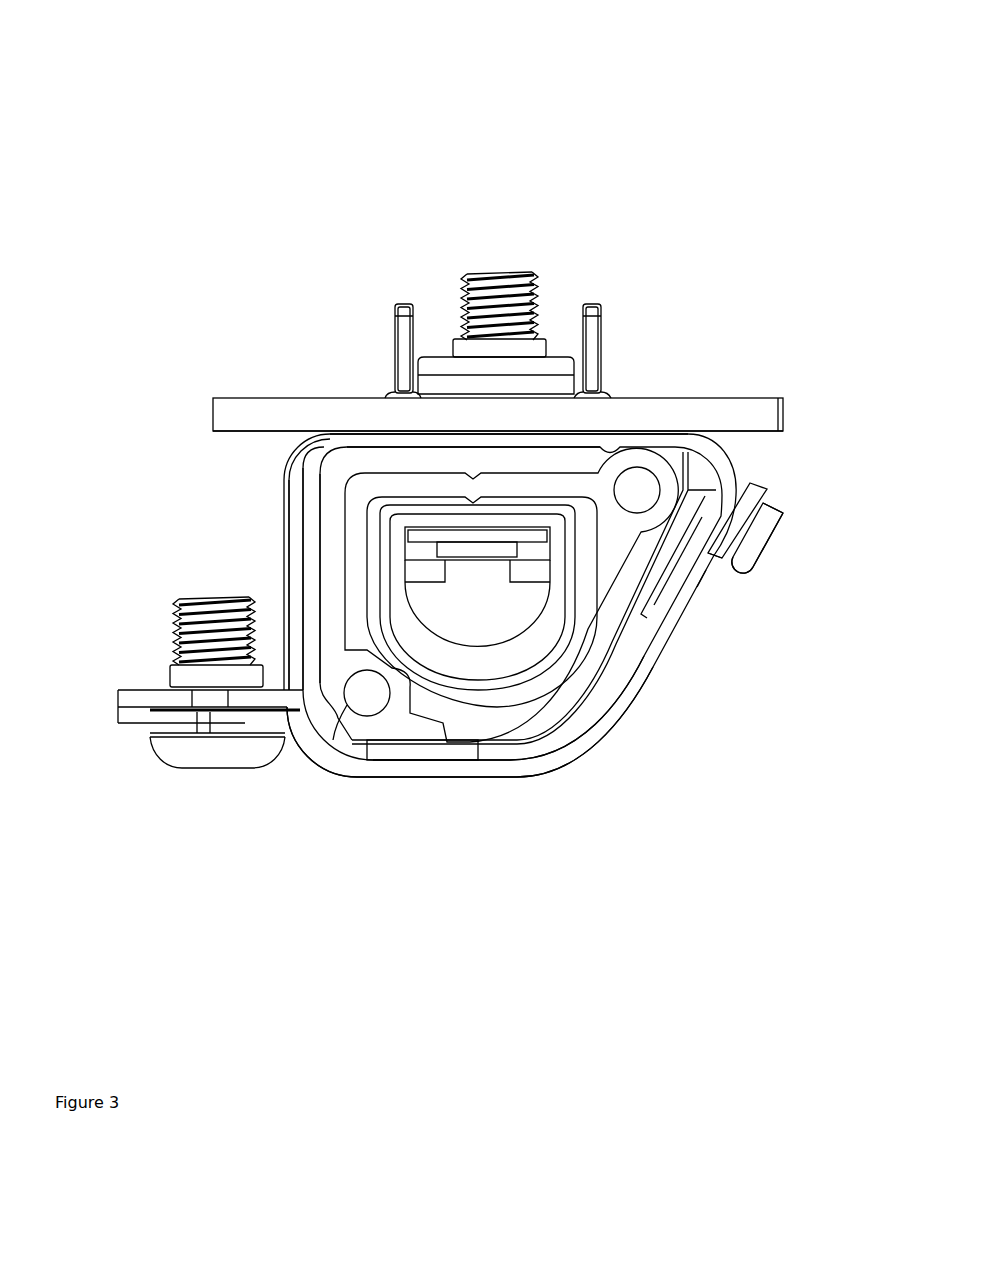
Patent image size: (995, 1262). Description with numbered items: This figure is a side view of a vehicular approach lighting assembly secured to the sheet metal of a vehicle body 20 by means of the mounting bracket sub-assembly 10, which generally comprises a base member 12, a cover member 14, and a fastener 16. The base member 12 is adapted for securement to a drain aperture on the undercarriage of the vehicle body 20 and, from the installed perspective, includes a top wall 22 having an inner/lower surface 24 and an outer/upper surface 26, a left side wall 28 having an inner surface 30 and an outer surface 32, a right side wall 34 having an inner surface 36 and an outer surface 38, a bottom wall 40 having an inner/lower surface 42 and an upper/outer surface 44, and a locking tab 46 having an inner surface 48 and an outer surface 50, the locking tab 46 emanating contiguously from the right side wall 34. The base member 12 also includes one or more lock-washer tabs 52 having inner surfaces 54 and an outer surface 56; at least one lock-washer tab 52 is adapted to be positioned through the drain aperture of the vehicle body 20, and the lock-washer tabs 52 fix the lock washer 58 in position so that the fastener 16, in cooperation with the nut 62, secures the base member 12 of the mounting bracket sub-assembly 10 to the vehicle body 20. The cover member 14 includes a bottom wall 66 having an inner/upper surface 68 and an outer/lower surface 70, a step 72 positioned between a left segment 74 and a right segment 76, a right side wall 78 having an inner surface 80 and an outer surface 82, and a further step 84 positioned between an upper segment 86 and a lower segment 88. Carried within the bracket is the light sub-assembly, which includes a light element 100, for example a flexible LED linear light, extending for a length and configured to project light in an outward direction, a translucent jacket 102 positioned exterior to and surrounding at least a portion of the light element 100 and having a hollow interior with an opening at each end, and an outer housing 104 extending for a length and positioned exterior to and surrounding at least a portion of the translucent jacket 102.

The mounting bracket sub-assembly 10 is at (768, 80).
The base member 12 is at (738, 454).
The cover member 14 is at (407, 782).
The fastener 16 is at (500, 272).
The vehicle body 20 is at (255, 414).
The top wall 22 is at (370, 439).
The inner/lower surface 24 is at (347, 448).
The outer/upper surface 26 is at (370, 435).
The left side wall 28 is at (312, 510).
The inner surface 30 is at (320, 487).
The outer surface 32 is at (303, 532).
The right side wall 34 is at (675, 607).
The inner surface 36 is at (658, 632).
The outer surface 38 is at (713, 593).
The bottom wall 40 is at (198, 740).
The inner/lower surface 42 is at (255, 712).
The upper/outer surface 44 is at (230, 707).
The locking tab 46 is at (763, 525).
The inner surface 48 is at (783, 511).
The outer surface 50 is at (767, 544).
The lock-washer tab 52 is at (407, 304).
The inner surfaces 54 is at (395, 349).
The outer surface 56 is at (395, 316).
The lock washer 58 is at (438, 372).
The nut 62 is at (543, 339).
The bottom wall 66 is at (513, 768).
The inner/upper surface 68 is at (440, 760).
The outer/lower surface 70 is at (473, 778).
The step 72 is at (312, 735).
The left portion/segment 74 is at (150, 714).
The right segment 76 is at (375, 762).
The right side wall 78 is at (718, 567).
The inner surface 80 is at (730, 573).
The outer surface 82 is at (743, 567).
The step 84 is at (650, 673).
The upper portion/segment 86 is at (752, 500).
The lower segment 88 is at (617, 718).
The light element 100 is at (462, 609).
The translucent jacket 102 is at (363, 555).
The outer housing 104 is at (338, 578).